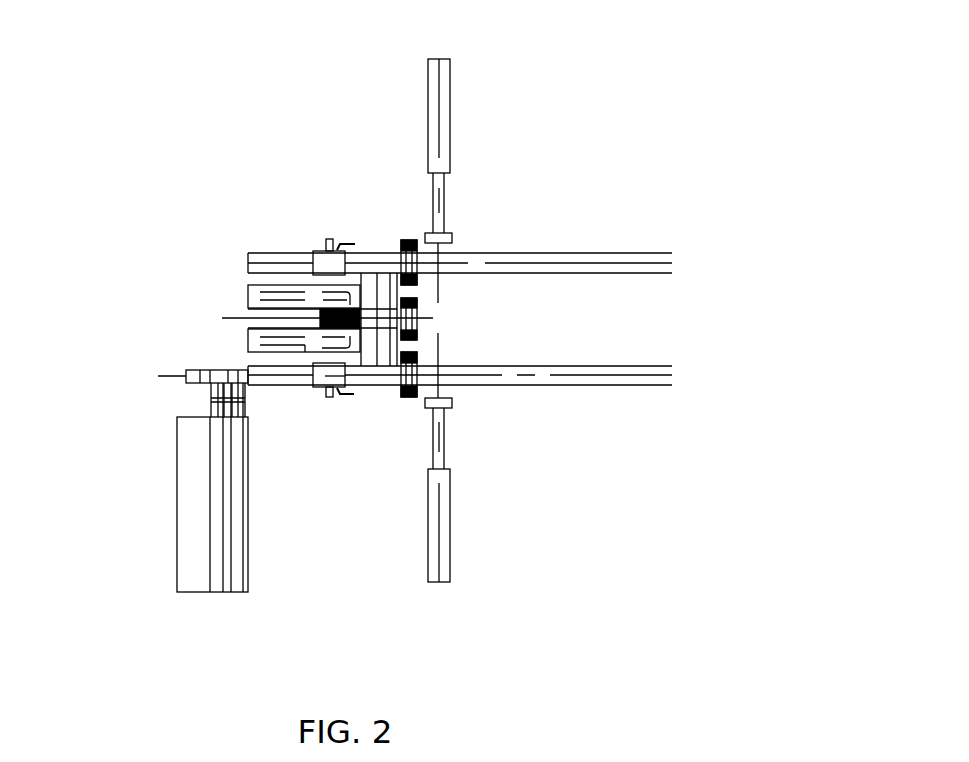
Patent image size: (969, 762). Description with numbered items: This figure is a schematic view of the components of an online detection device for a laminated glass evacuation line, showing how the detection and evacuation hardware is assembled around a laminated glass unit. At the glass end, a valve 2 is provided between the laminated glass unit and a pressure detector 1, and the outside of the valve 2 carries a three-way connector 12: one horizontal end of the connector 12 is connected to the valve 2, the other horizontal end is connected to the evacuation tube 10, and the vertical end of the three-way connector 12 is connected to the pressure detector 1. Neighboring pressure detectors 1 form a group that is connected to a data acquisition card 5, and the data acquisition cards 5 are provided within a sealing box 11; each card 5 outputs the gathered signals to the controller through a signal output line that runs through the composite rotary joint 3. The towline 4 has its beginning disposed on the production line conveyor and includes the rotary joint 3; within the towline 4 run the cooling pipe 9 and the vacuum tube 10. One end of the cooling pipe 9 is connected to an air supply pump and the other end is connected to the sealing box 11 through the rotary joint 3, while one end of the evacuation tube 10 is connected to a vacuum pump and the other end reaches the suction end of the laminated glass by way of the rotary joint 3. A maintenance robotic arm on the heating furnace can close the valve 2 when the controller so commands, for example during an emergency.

The pressure detector 1 is at (328, 239).
The valve 2 is at (340, 248).
The composite rotary joint 3 is at (190, 382).
The towline 4 is at (187, 417).
The data acquisition card 5 is at (337, 308).
The cooling pipe 9 is at (235, 482).
The vacuum tube 10 is at (290, 253).
The sealing box 11 is at (250, 307).
The three-way connector 12 is at (312, 253).